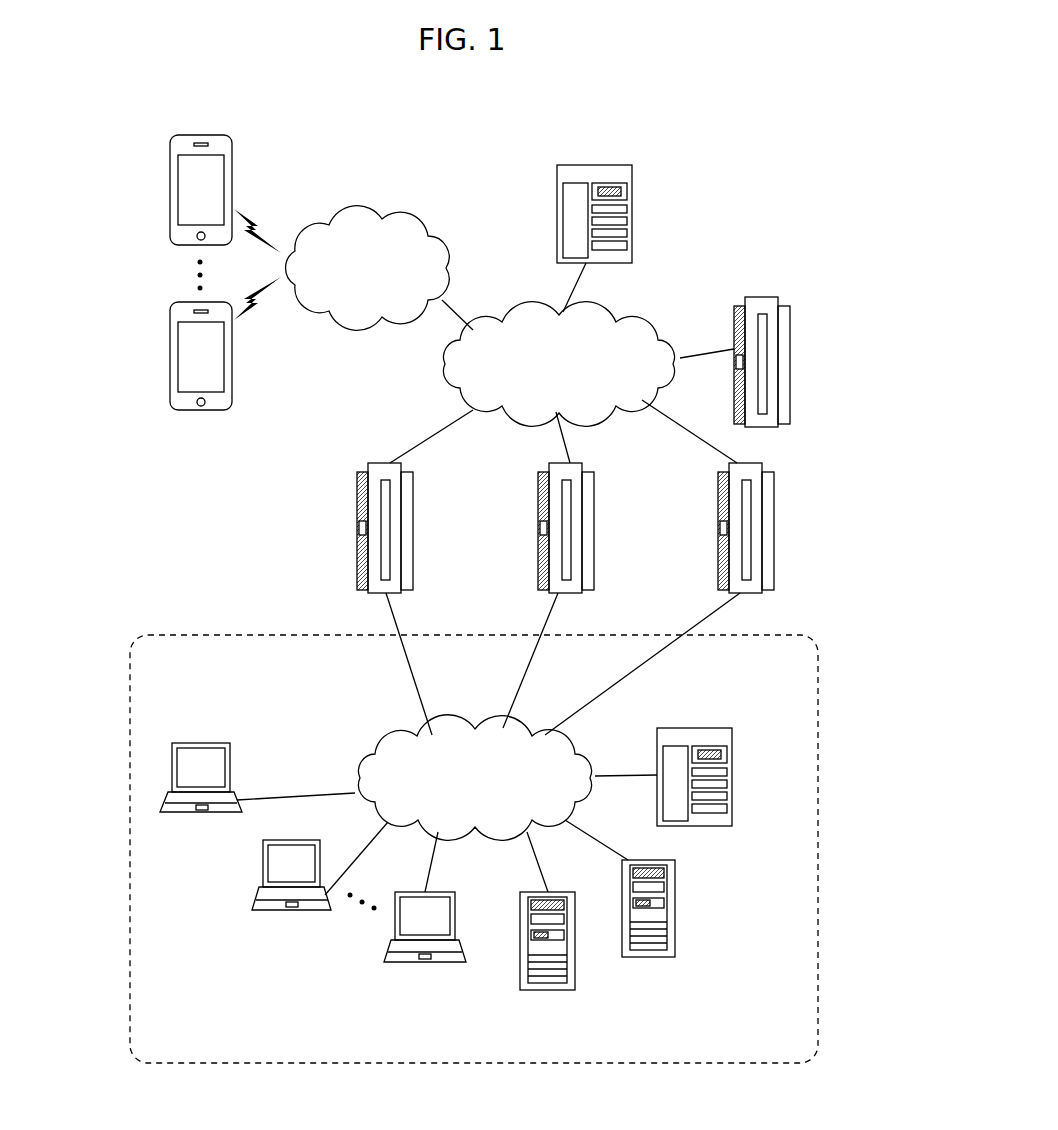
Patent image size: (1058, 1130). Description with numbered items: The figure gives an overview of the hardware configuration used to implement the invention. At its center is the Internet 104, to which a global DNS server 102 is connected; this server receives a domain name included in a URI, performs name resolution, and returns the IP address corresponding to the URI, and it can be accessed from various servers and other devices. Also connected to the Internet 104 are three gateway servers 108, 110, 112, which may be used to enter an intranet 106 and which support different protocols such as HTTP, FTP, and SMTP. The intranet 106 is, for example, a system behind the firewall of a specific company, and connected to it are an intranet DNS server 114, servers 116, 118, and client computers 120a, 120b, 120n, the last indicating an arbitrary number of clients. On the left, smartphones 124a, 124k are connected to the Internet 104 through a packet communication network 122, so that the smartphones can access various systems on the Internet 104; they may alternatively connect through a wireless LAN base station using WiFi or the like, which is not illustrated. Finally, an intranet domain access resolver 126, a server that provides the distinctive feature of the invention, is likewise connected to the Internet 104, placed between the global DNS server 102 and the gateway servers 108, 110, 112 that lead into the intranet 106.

The global DNS server 102 is at (626, 170).
The Internet 104 is at (626, 320).
The intranet 106 is at (581, 752).
The gateway server 108 is at (436, 520).
The gateway server 110 is at (609, 520).
The gateway server 112 is at (797, 520).
The intranet DNS server 114 is at (725, 736).
The server 116 is at (691, 908).
The server 118 is at (589, 950).
The client computer 120a is at (194, 826).
The client computer 120b is at (302, 918).
The client computer 120n is at (435, 972).
The packet communication network 122 is at (437, 211).
The smartphone 124a is at (170, 201).
The smartphone 124k is at (170, 358).
The intranet domain access resolver 126 is at (805, 307).